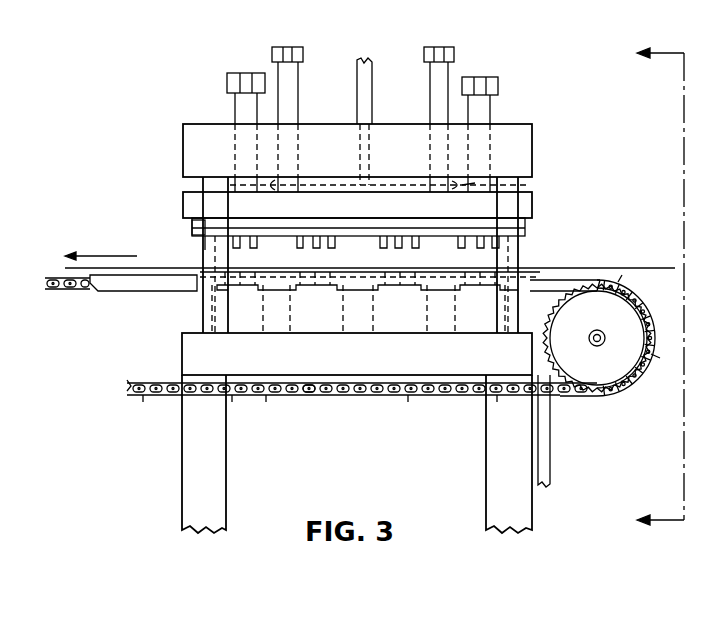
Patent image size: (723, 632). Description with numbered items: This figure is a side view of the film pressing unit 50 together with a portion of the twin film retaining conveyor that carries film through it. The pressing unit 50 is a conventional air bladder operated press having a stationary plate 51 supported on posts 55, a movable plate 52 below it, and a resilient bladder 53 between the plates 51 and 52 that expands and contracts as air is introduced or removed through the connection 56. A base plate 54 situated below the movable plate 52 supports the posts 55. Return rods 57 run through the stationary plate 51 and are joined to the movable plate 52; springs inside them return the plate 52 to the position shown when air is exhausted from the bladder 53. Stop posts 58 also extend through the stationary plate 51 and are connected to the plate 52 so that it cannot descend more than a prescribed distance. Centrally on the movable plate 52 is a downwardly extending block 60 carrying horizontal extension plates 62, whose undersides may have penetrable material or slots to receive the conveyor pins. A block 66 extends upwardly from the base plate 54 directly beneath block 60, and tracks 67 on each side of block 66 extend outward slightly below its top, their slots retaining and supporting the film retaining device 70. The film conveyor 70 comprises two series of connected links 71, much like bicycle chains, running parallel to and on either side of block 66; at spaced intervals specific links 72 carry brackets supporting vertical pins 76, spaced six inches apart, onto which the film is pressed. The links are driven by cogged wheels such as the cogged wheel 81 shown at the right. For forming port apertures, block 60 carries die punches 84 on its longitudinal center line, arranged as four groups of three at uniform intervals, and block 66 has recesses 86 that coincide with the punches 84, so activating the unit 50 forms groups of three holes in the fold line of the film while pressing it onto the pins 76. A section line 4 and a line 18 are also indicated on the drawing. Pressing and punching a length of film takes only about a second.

The section line 4- 4 is at (673, 297).
The conveyor path line 18 is at (604, 268).
The film pressing unit 50 is at (555, 100).
The stationary plate 51 is at (532, 152).
The movable plate 52 is at (532, 208).
The resilient bladder 53 is at (518, 189).
The base plate 54 is at (182, 352).
The posts 55 is at (213, 259).
The connection 56 is at (372, 96).
The return rods 57 is at (292, 86).
The stop posts 58 is at (243, 107).
The block 60 is at (192, 222).
The horizontal extension plates 62 is at (192, 231).
The block 66 is at (452, 329).
The tracks 67 is at (138, 292).
The film retaining device 70 is at (645, 383).
The connected links 71 is at (655, 306).
The links 72 is at (325, 396).
The pins 76 is at (320, 396).
The cogged wheel 81 is at (608, 321).
The die punches 84 is at (254, 250).
The recesses 86 is at (386, 300).